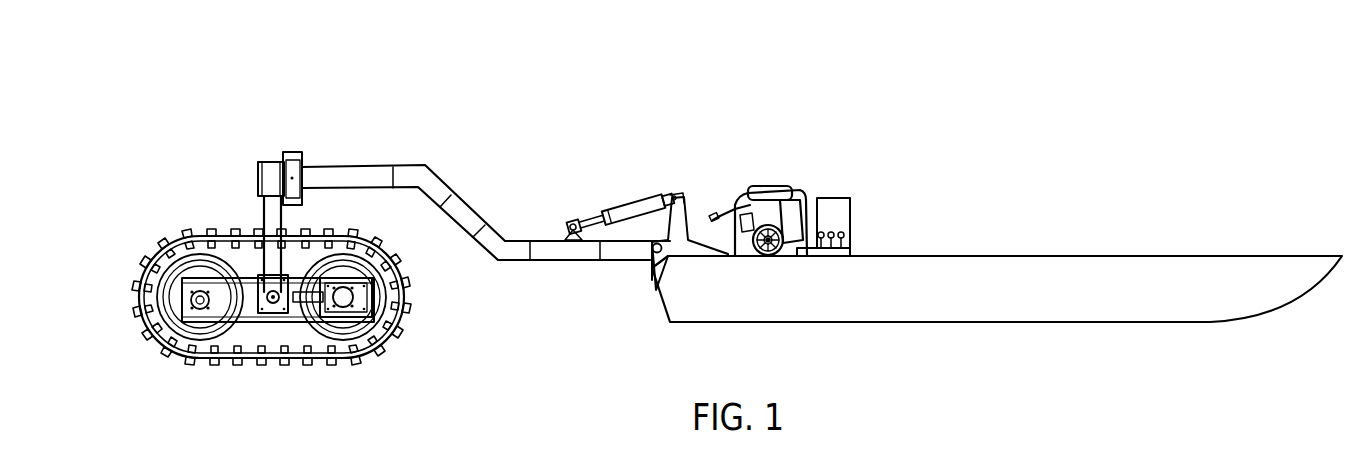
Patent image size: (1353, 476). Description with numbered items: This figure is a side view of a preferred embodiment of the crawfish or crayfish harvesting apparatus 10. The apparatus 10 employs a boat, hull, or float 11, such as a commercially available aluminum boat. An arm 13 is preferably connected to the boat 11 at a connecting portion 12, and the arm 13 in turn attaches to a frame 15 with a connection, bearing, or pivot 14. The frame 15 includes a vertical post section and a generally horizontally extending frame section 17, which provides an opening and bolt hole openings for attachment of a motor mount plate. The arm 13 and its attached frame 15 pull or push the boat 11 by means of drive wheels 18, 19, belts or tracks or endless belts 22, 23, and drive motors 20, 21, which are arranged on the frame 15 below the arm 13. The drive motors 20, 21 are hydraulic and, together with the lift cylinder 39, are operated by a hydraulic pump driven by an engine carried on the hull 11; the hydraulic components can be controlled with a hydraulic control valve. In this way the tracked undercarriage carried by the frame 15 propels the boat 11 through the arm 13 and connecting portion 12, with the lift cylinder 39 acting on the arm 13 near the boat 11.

The crawfish harvesting apparatus 10 is at (445, 65).
The boat 11 is at (1032, 310).
The connecting portion 12 is at (648, 268).
The arm 13 is at (458, 193).
The pivot 14 is at (290, 152).
The frame 15 is at (262, 160).
The horizontally extending frame section 17 is at (249, 312).
The drive wheel 18 is at (216, 348).
The drive wheel 19 is at (377, 352).
The drive motor 20 is at (195, 302).
The drive motor 21 is at (350, 297).
The endless belt 22 is at (172, 240).
The endless belt 23 is at (343, 297).
The lift cylinder 39 is at (635, 195).